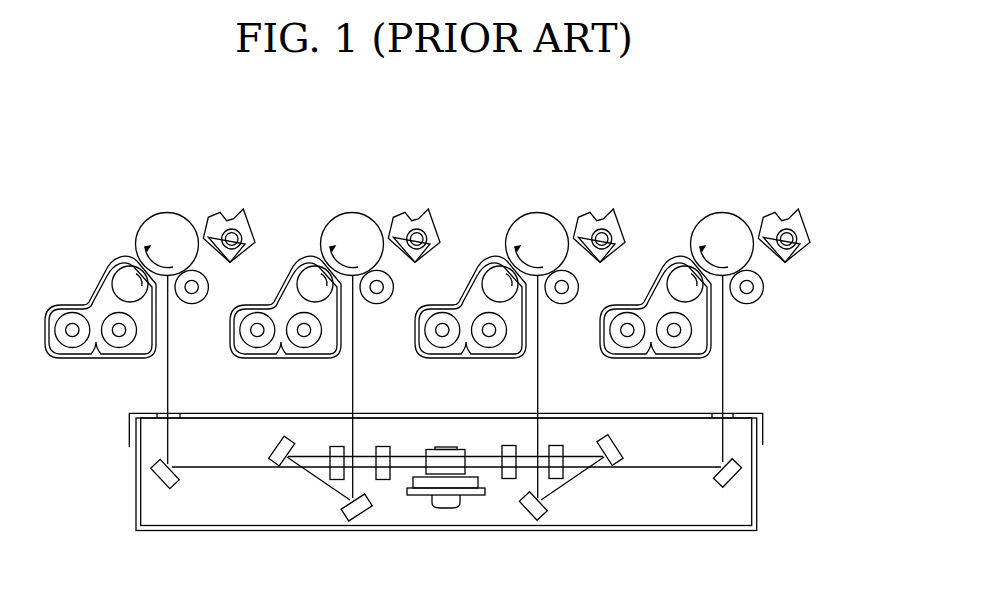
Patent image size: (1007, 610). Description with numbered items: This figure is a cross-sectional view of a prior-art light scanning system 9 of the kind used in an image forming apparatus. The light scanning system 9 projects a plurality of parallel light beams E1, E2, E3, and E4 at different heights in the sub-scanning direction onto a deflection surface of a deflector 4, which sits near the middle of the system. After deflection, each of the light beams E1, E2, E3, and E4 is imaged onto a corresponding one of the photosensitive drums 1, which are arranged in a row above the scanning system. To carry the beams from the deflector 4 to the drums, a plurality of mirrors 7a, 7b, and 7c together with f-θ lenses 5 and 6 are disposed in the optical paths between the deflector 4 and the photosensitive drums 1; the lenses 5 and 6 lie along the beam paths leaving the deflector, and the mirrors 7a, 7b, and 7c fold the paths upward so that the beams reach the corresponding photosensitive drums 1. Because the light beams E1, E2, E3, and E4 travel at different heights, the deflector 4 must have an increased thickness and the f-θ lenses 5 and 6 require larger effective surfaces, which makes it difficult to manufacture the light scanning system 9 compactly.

The photosensitive drum 1 is at (717, 216).
The light beam E1 is at (705, 304).
The light beam E2 is at (545, 341).
The light beam E3 is at (360, 338).
The light beam E4 is at (175, 340).
The deflector 4 is at (444, 467).
The f-θ lens 5 is at (507, 445).
The f-θ lens 6 is at (553, 445).
The mirror 7a is at (741, 477).
The mirror 7b is at (617, 442).
The mirror 7c is at (548, 510).
The light scanning system 9 is at (224, 528).